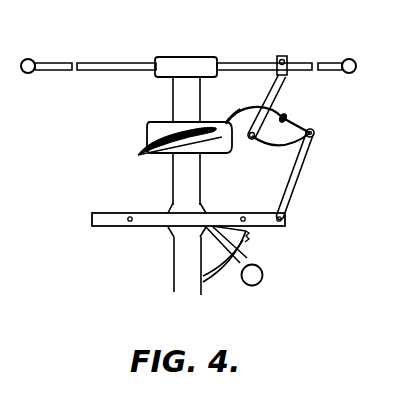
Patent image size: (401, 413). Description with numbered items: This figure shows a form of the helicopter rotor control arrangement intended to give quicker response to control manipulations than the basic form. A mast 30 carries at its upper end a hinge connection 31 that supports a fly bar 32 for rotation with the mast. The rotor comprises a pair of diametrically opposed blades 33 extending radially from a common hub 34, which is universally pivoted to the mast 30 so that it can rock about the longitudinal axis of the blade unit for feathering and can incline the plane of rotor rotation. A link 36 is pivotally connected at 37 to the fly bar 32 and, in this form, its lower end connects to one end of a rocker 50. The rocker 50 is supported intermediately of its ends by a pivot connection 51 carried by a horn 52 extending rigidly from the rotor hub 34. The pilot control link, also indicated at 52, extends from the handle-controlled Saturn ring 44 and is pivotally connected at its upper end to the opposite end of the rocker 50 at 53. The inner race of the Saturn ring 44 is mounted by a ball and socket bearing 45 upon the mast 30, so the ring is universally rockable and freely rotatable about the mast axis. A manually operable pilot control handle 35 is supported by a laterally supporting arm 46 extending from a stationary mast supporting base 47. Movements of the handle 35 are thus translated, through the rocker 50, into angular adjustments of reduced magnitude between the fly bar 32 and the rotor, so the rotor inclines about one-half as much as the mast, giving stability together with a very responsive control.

The mast 30 is at (174, 172).
The hinge connection 31 is at (184, 66).
The fly bar 32 is at (328, 61).
The blades 33 is at (139, 153).
The hub 34 is at (154, 122).
The pilot control handle 35 is at (263, 275).
The link 36 is at (266, 103).
The pivot connection 37 is at (284, 56).
The Saturn ring 44 is at (231, 214).
The ball and socket bearing 45 is at (170, 210).
The laterally supporting arm 46 is at (250, 238).
The mast supporting base 47 is at (178, 264).
The rocker 50 is at (258, 144).
The pivot connection 51 is at (290, 118).
The horn and pilot control link 52 is at (243, 110).
The pivot connection 53 is at (315, 133).